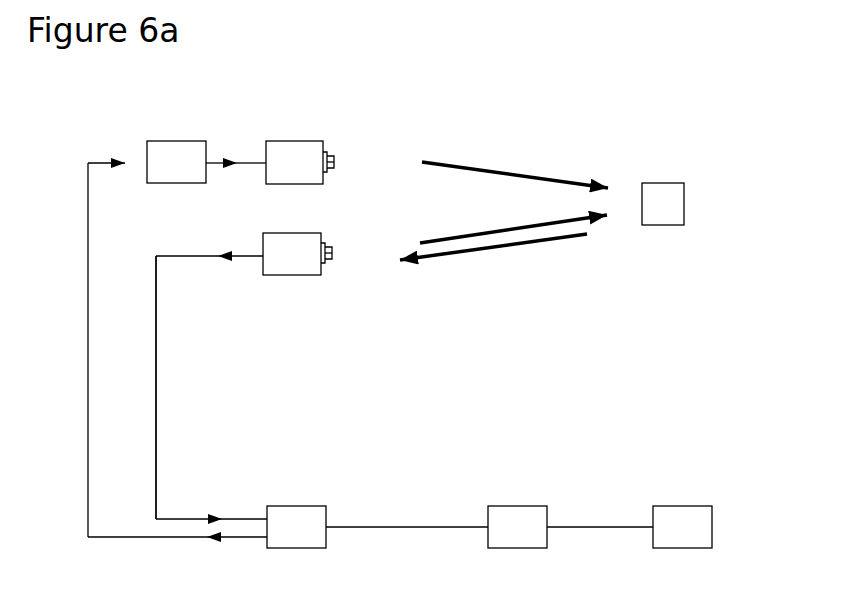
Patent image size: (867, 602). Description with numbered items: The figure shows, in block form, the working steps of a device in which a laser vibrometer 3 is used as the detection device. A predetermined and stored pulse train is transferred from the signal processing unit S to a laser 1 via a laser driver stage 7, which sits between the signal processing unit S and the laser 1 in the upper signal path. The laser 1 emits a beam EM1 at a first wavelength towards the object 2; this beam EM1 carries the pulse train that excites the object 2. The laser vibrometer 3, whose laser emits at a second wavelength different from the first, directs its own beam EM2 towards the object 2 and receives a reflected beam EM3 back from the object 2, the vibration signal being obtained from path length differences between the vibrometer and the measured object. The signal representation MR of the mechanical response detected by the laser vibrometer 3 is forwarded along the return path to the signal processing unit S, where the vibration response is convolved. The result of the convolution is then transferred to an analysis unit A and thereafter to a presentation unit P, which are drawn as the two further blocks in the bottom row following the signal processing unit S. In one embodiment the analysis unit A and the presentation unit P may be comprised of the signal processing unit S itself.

The laser driver stage 7 is at (168, 141).
The laser 1 is at (287, 141).
The laser vibrometer 3 is at (283, 275).
The object 2 is at (653, 183).
The beam with first wavelength EM1 is at (517, 170).
The beam with second wavelength EM2 is at (478, 233).
The reflected beam EM3 is at (552, 245).
The signal representation of the mechanical response MR is at (156, 410).
The signal processing unit S is at (288, 506).
The analysis unit A is at (512, 506).
The presentation unit P is at (680, 506).